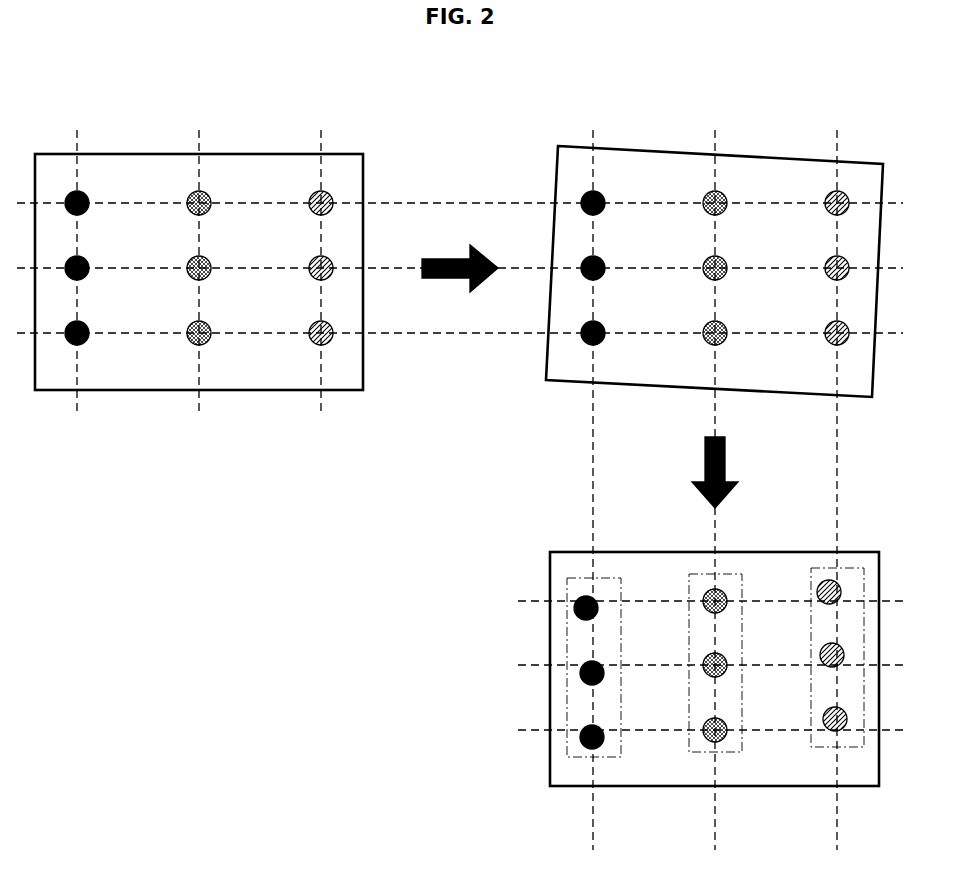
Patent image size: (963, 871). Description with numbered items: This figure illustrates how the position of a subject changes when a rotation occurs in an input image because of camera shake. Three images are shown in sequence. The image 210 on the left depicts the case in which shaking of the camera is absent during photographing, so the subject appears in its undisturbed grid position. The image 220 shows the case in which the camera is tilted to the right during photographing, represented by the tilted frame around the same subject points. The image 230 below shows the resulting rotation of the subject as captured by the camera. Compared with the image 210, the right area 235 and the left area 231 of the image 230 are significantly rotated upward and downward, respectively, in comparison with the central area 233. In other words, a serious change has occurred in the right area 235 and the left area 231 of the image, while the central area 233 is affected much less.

The image 210 is at (254, 153).
The image 220 is at (773, 158).
The image 230 is at (723, 659).
The left area 231 is at (609, 757).
The central area 233 is at (731, 752).
The right area 235 is at (853, 748).